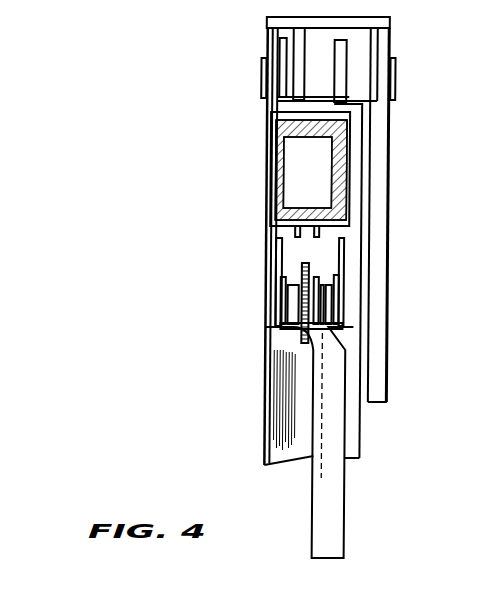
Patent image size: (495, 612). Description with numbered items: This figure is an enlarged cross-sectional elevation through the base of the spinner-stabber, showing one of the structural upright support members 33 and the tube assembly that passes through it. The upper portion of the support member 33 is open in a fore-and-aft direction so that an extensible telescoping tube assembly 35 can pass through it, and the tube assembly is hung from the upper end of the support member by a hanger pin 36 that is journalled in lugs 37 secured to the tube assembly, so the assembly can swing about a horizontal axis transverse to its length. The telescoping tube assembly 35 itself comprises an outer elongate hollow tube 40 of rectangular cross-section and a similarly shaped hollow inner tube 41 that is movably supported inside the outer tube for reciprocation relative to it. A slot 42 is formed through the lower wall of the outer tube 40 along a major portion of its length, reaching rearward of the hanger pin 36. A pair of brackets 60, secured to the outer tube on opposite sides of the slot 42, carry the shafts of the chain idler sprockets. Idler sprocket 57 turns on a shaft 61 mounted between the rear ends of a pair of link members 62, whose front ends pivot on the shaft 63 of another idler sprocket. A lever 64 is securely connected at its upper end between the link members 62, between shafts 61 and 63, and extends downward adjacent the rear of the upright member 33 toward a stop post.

The structural upright support member 33 is at (267, 395).
The extensible telescoping tube assembly 35 is at (275, 151).
The hanger pin 36 is at (397, 90).
The lugs 37 is at (268, 39).
The outer elongate hollow tube 40 is at (350, 183).
The inner tube 41 is at (280, 191).
The slot 42 is at (318, 197).
The idler sprocket 57 is at (300, 270).
The brackets 60 is at (276, 257).
The shaft 61 is at (297, 294).
The link members 62 is at (300, 322).
The shaft 63 is at (348, 299).
The lever 64 is at (343, 496).